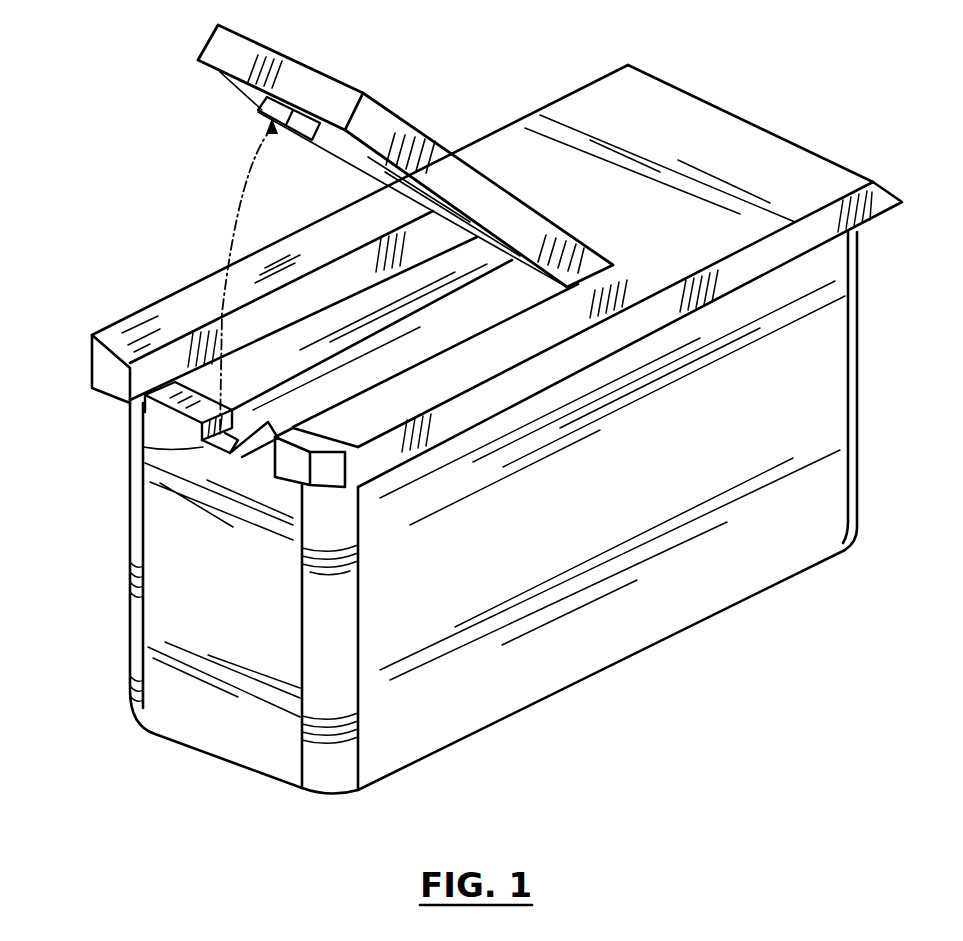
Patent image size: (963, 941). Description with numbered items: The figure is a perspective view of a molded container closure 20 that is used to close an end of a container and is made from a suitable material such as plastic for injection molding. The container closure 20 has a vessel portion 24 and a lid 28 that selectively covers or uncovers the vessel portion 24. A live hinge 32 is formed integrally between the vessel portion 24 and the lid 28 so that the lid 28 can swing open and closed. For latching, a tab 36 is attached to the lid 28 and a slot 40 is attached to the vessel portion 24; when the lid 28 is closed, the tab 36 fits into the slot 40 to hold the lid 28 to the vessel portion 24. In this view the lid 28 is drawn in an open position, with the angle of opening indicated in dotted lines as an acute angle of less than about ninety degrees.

The container closure 20 is at (471, 409).
The vessel portion 24 is at (764, 438).
The lid 28 is at (365, 110).
The live hinge 32 is at (587, 243).
The tab 36 is at (260, 110).
The slot 40 is at (135, 432).